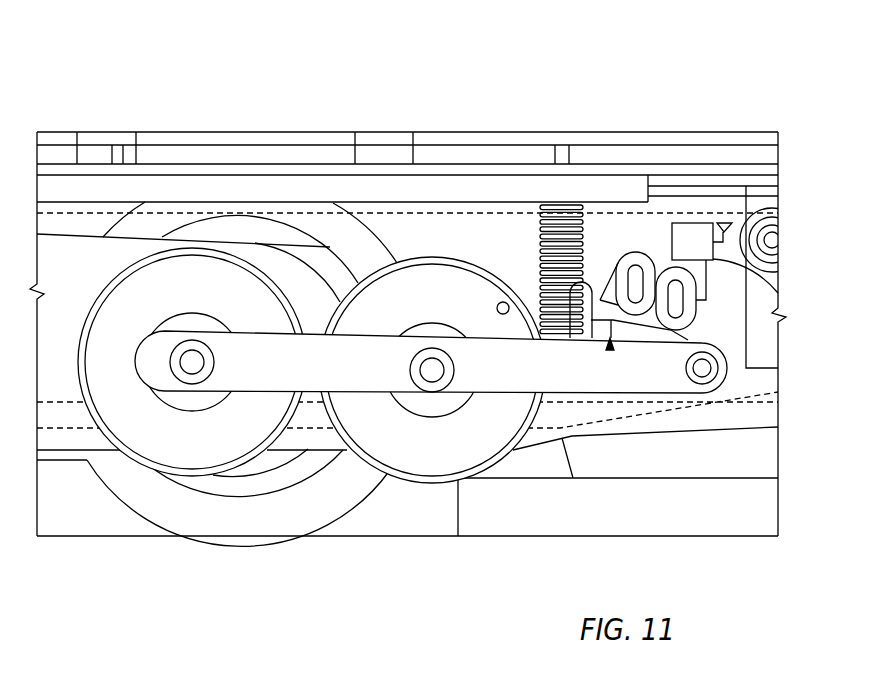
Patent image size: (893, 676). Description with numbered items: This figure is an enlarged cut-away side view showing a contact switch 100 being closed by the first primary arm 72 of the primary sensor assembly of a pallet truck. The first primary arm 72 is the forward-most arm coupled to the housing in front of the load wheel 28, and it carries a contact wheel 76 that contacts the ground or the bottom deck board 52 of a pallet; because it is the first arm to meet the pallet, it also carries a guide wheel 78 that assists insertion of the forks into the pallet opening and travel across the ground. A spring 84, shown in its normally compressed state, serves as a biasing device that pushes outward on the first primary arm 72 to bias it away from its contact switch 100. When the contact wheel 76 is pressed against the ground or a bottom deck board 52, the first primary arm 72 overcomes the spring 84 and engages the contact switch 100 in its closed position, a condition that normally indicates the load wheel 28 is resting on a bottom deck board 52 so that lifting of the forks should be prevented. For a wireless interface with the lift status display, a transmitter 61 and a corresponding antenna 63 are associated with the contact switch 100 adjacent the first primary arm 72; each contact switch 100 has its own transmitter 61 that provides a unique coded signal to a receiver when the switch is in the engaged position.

The load wheel 28 is at (147, 520).
The bottom deck board 52 is at (768, 512).
The transmitter 61 is at (778, 293).
The antenna 63 is at (724, 223).
The first primary arm 72 is at (620, 393).
The contact wheel 76 is at (293, 534).
The guide wheel 78 is at (427, 483).
The spring 84 is at (588, 237).
The contact switch 100 is at (610, 348).